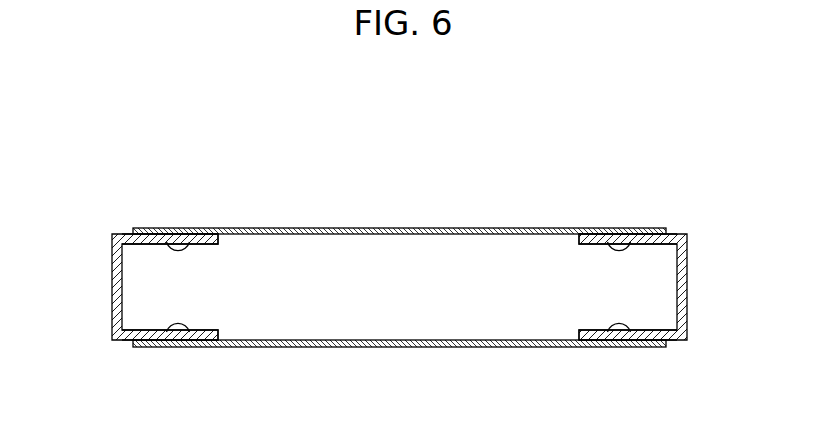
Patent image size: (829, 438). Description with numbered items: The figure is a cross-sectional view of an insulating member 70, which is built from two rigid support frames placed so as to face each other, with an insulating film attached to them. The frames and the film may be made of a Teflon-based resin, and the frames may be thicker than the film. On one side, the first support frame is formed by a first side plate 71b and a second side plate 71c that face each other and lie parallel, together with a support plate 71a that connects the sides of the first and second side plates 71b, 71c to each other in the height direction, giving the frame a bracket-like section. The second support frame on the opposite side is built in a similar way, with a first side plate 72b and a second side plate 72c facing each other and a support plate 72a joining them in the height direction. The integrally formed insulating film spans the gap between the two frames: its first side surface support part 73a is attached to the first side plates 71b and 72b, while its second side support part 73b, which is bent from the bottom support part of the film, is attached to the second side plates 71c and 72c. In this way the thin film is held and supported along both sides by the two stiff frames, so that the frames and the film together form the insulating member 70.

The insulating member 70 is at (477, 217).
The support plate 71a is at (112, 277).
The first side plate 71b is at (169, 230).
The second side plate 71c is at (168, 345).
The support plate 72a is at (687, 277).
The first side plate 72b is at (623, 236).
The second side plate 72c is at (631, 338).
The first side surface support part 73a is at (393, 228).
The second side support part 73b is at (393, 346).